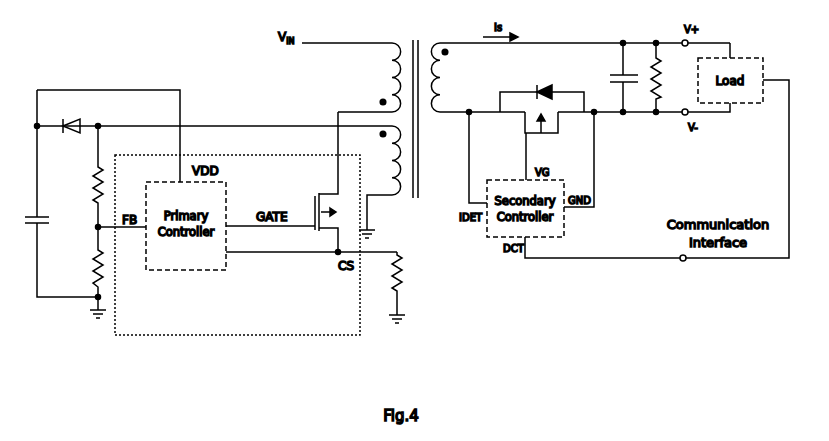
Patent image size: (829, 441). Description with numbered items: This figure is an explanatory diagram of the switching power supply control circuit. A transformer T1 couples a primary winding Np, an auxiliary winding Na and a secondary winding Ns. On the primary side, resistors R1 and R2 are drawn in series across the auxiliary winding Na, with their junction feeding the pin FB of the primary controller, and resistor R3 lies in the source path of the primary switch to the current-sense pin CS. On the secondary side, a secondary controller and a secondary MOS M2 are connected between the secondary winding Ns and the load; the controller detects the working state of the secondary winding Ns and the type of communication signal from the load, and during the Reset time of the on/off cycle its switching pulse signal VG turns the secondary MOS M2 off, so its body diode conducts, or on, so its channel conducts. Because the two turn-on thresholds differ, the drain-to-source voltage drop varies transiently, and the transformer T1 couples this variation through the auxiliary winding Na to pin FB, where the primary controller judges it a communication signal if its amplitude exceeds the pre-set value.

The feedback resistor R1 is at (90, 176).
The feedback resistor R2 is at (90, 268).
The current sense resistor R3 is at (389, 283).
The transformer T1 is at (417, 110).
The primary winding Np is at (351, 77).
The auxiliary winding Na is at (370, 178).
The secondary winding Ns is at (580, 77).
The secondary MOS M2 is at (531, 122).